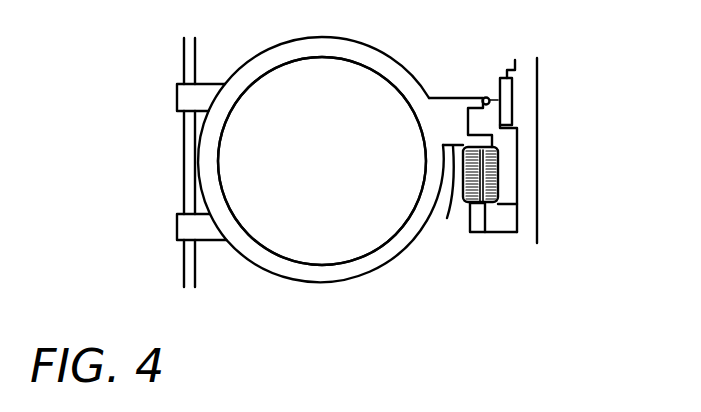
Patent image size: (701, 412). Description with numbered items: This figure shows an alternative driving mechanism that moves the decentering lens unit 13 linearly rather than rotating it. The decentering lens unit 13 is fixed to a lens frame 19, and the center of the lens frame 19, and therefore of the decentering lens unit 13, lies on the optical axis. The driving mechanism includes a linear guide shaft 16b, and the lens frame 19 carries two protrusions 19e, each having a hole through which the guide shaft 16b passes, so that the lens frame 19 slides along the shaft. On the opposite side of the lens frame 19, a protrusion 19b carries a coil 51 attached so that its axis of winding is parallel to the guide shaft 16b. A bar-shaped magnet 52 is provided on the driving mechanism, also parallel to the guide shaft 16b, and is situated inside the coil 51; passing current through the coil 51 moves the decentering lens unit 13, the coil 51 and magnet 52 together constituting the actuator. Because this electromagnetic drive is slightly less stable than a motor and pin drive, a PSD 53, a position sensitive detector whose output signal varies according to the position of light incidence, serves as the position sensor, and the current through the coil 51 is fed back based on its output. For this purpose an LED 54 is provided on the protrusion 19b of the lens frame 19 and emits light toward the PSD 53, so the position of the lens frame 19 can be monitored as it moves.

The decentering lens unit 13 is at (332, 250).
The lens frame 19 is at (262, 262).
The protrusion 19b is at (447, 218).
The protrusion 19e is at (177, 98).
The linear guide shaft 16b is at (184, 168).
The coil 51 is at (502, 182).
The bar-shaped magnet 52 is at (480, 205).
The PSD (position sensitive detector) 53 is at (500, 80).
The LED 54 is at (484, 98).